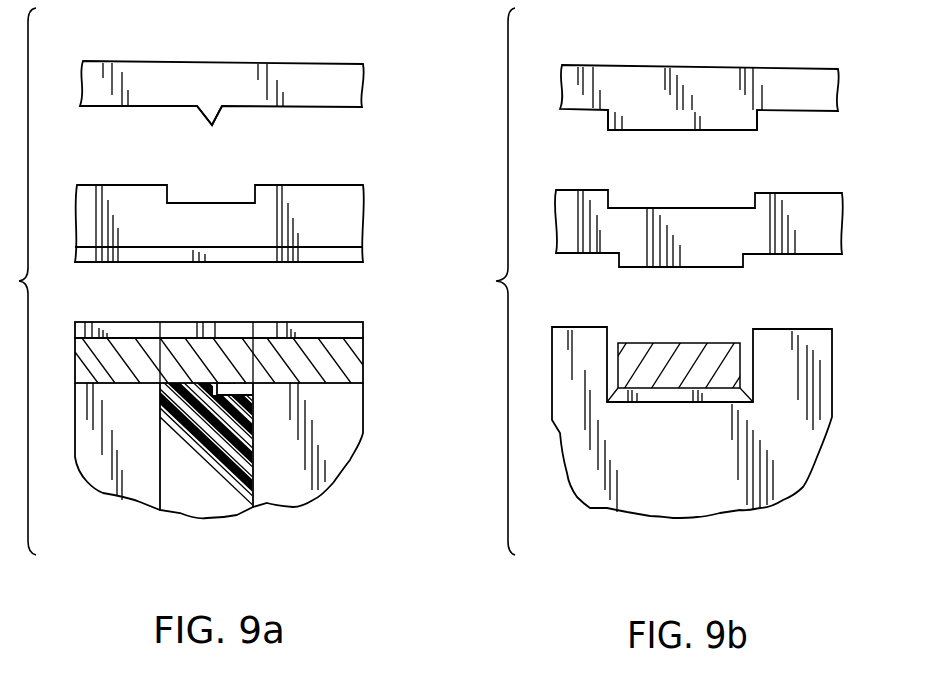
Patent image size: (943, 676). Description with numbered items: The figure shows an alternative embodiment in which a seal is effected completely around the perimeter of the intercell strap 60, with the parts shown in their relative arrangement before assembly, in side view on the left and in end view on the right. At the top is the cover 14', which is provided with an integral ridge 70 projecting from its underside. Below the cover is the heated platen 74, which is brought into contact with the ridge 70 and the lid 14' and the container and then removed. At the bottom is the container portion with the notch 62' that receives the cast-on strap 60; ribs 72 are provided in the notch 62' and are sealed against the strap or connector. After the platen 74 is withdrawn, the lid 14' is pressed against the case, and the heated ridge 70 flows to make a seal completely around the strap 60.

In FIG. 9A, the cover 14' is at (222, 70).
In FIG. 9B, the cover 14' is at (699, 74).
In FIG. 9A, the integral ridge 70 is at (219, 116).
In FIG. 9B, the integral ridge 70 is at (733, 120).
In FIG. 9A, the heated platen 74 is at (330, 229).
In FIG. 9A, the notch 62' is at (219, 313).
In FIG. 9A, the strap 60 is at (355, 369).
In FIG. 9A, the ribs 72 is at (197, 388).